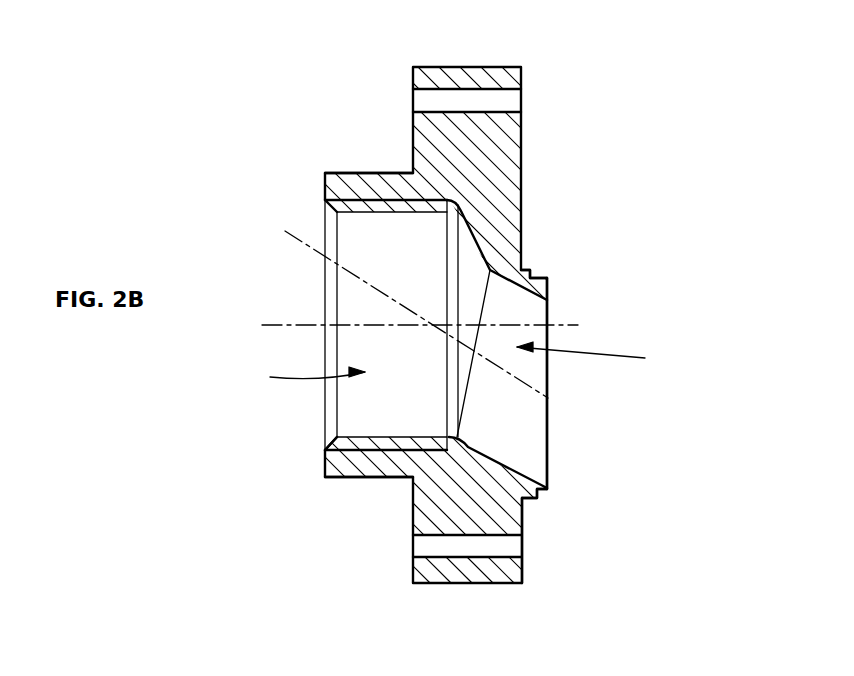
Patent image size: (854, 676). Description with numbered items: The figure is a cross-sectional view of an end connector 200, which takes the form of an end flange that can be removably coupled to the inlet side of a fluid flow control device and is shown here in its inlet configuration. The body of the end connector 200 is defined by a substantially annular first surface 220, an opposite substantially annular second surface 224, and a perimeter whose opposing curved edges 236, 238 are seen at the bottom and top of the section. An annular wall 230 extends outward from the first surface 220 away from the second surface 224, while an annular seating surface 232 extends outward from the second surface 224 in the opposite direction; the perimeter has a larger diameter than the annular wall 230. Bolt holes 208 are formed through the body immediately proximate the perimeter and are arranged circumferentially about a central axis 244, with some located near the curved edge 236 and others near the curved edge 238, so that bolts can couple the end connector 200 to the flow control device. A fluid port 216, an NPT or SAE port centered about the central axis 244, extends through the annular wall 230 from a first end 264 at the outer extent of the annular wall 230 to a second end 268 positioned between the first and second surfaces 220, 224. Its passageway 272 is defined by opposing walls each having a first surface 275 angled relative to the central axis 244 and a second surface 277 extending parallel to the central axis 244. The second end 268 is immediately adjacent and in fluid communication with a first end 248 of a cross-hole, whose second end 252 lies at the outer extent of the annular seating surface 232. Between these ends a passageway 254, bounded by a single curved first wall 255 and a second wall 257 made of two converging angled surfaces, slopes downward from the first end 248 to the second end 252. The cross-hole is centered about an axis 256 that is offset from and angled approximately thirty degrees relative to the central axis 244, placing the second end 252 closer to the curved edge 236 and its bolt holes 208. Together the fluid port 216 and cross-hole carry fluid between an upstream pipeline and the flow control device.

The end connector 200 is at (548, 58).
The bolt holes 208 is at (492, 112).
The fluid port 216 is at (293, 375).
The first surface 220 is at (413, 520).
The second surface 224 is at (520, 572).
The annular wall 230 is at (350, 173).
The annular seating surface 232 is at (544, 498).
The curved edge 236 is at (457, 583).
The curved edge 238 is at (455, 66).
The central axis 244 is at (575, 323).
The first end 248 is at (460, 257).
The second end 252 is at (550, 480).
The passageway 254 is at (604, 355).
The first wall 255 is at (503, 463).
The axis 256 is at (567, 411).
The second wall 257 is at (545, 280).
The first end 264 is at (325, 213).
The second end 268 is at (457, 236).
The passageway 272 is at (330, 441).
The first surface 275 is at (323, 449).
The second surface 277 is at (410, 437).